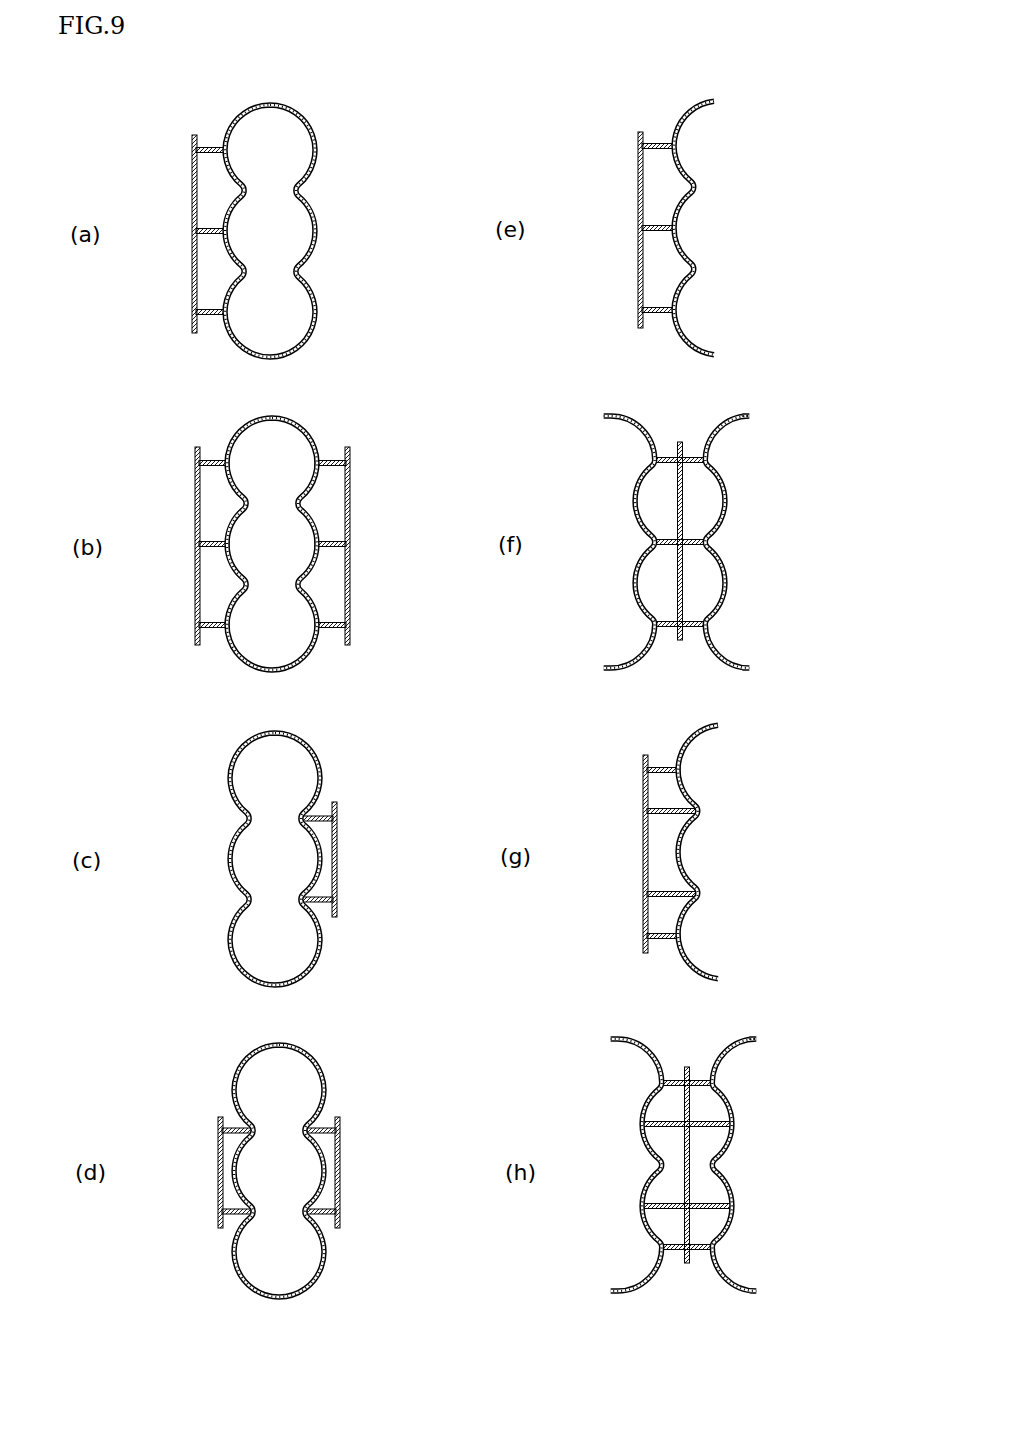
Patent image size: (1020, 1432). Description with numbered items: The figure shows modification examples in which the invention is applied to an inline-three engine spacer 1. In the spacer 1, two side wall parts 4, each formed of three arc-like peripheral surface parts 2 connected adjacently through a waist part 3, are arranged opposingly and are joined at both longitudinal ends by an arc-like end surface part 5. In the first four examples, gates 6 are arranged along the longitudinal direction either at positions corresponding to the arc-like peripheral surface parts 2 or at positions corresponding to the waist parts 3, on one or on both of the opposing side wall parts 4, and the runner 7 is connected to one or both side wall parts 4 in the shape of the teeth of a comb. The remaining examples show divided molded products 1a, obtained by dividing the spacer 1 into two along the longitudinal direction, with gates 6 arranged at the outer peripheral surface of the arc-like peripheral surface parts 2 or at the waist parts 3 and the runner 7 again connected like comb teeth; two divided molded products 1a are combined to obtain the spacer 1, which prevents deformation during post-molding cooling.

The spacer 1 is at (318, 116).
The divided molded product 1a is at (746, 113).
The arc-like peripheral surface part 2 is at (317, 237).
The waist part 3 is at (299, 190).
The side wall part 4 is at (369, 163).
The arc-like end surface part 5 is at (240, 112).
The gate 6 is at (226, 147).
The runner 7 is at (192, 173).